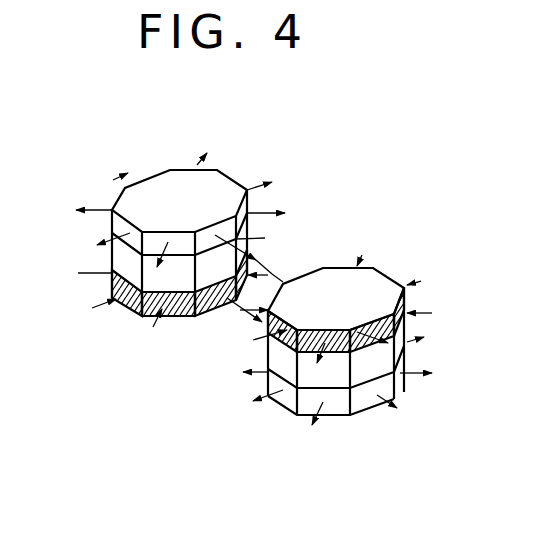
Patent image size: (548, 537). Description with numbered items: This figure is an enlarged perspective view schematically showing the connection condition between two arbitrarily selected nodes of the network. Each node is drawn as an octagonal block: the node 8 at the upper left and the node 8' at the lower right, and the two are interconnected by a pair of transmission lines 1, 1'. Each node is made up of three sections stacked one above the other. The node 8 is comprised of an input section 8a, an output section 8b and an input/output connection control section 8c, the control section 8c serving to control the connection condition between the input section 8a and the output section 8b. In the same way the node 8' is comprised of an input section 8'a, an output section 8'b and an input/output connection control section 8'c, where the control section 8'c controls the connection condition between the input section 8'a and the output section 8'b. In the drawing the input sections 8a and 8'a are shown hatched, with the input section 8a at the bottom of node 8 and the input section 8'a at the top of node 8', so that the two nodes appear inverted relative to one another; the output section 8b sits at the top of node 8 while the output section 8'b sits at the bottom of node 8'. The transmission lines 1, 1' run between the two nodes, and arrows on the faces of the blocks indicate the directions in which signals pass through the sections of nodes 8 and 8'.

The node 8 is at (155, 244).
The input section 8a is at (128, 317).
The output section 8b is at (167, 188).
The input/output connection control section 8c is at (120, 255).
The transmission line 1 is at (239, 297).
The node 8' is at (360, 340).
The input section 8'a is at (348, 305).
The output section 8'b is at (331, 427).
The input/output connection control section 8'c is at (366, 351).
The transmission line 1' is at (295, 251).